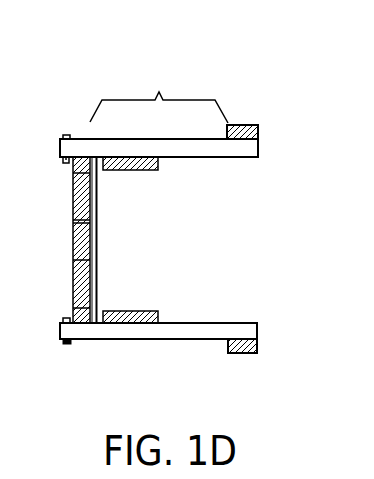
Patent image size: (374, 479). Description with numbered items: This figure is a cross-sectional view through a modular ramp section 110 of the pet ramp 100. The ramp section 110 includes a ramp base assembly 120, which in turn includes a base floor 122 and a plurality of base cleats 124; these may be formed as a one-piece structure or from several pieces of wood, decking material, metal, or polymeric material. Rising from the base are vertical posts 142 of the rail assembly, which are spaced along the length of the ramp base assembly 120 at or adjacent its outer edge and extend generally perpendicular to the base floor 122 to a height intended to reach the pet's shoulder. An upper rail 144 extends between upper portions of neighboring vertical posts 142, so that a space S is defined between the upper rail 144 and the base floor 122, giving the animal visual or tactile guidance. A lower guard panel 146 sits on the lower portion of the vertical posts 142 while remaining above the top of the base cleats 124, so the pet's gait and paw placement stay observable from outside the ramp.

The pet ramp 100 is at (149, 193).
The ramp section 110 is at (158, 350).
The ramp base assembly 120 is at (58, 240).
The base floor 122 is at (39, 143).
The base cleats 124 is at (120, 240).
The vertical posts 142 is at (168, 168).
The upper rail 144 is at (258, 111).
The lower guard panel 146 is at (153, 180).